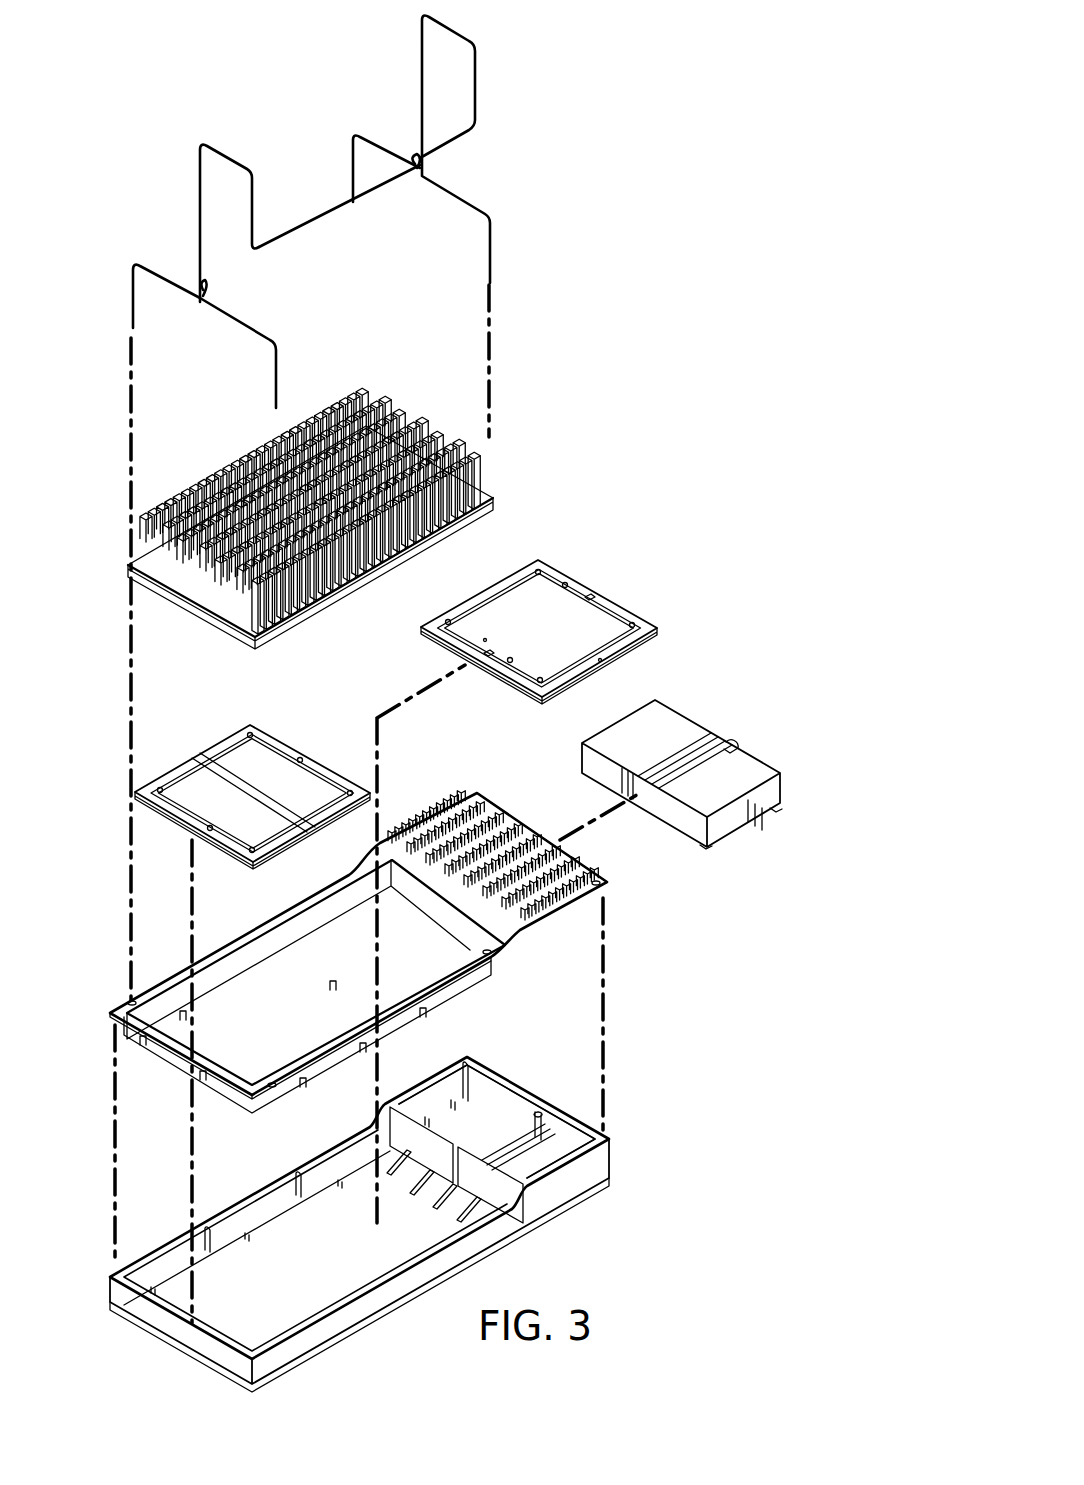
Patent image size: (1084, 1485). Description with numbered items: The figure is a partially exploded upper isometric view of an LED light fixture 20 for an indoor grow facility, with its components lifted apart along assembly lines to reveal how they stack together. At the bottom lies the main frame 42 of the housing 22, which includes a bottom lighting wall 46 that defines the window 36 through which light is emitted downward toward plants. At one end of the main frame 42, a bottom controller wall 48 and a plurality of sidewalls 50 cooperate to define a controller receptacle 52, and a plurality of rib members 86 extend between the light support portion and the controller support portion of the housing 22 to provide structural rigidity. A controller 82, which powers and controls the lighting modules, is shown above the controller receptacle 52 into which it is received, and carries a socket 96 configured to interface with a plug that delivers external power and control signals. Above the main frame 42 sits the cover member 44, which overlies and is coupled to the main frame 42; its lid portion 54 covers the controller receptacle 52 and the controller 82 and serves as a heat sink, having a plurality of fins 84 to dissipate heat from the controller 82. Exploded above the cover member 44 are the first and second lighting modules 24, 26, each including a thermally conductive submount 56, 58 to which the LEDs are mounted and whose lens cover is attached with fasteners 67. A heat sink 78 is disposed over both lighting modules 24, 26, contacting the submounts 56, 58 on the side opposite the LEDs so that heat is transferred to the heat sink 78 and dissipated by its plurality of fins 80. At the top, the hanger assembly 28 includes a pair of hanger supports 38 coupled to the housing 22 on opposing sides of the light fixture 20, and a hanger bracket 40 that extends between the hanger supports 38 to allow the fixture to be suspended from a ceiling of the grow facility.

The light fixture 20 is at (640, 128).
The housing 22 is at (493, 837).
The first lighting module 24 is at (539, 609).
The second lighting module 26 is at (252, 776).
The hanger assembly 28 is at (311, 212).
The window 36 is at (282, 1235).
The hanger supports 38 is at (457, 196).
The hanger bracket 40 is at (330, 207).
The main frame 42 is at (371, 1193).
The cover member 44 is at (375, 934).
The bottom lighting wall 46 is at (142, 1322).
The bottom controller wall 48 is at (488, 1125).
The sidewalls 50 is at (420, 1094).
The controller receptacle 52 is at (468, 1070).
The lid portion 54 is at (510, 842).
The submount 56 is at (505, 577).
The submount 58 is at (225, 738).
The fasteners 67 is at (565, 585).
The heat sink 78 is at (310, 502).
The fins 80 is at (352, 405).
The controller 82 is at (685, 753).
The fins 84 is at (445, 808).
The rib members 86 is at (425, 1205).
The socket 96 is at (740, 732).